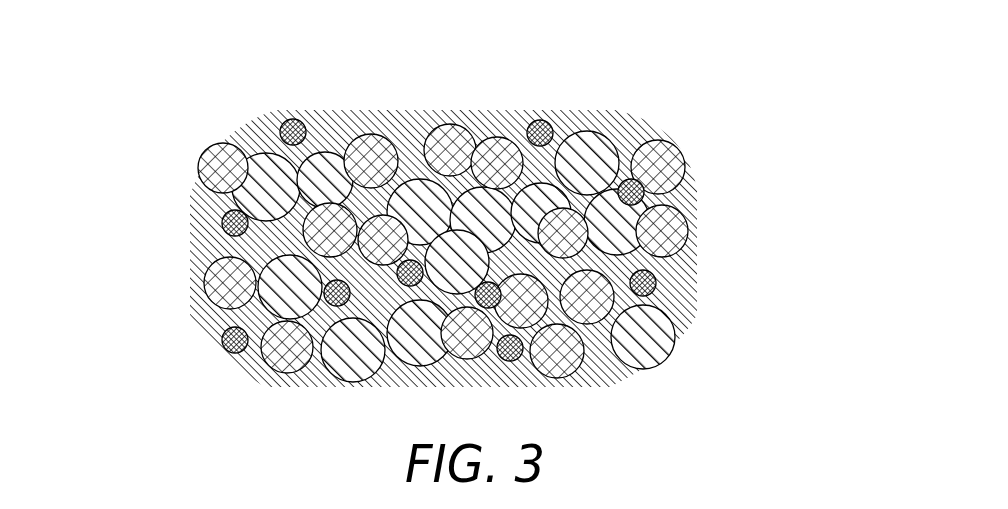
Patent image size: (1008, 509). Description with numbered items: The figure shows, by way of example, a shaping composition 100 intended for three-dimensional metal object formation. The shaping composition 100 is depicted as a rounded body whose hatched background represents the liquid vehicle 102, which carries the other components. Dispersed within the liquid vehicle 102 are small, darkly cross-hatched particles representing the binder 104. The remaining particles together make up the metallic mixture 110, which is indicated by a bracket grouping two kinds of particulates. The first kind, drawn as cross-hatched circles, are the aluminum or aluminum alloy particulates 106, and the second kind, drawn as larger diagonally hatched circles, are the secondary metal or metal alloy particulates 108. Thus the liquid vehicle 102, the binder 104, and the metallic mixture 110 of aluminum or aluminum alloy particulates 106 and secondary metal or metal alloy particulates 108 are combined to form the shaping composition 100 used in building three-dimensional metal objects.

The shaping composition 100 is at (199, 62).
The liquid vehicle 102 is at (194, 246).
The binder 104 is at (203, 342).
The aluminum or aluminum alloy particulates 106 is at (693, 236).
The secondary metal or metal alloy particulates 108 is at (678, 343).
The metallic mixture 110 is at (857, 198).